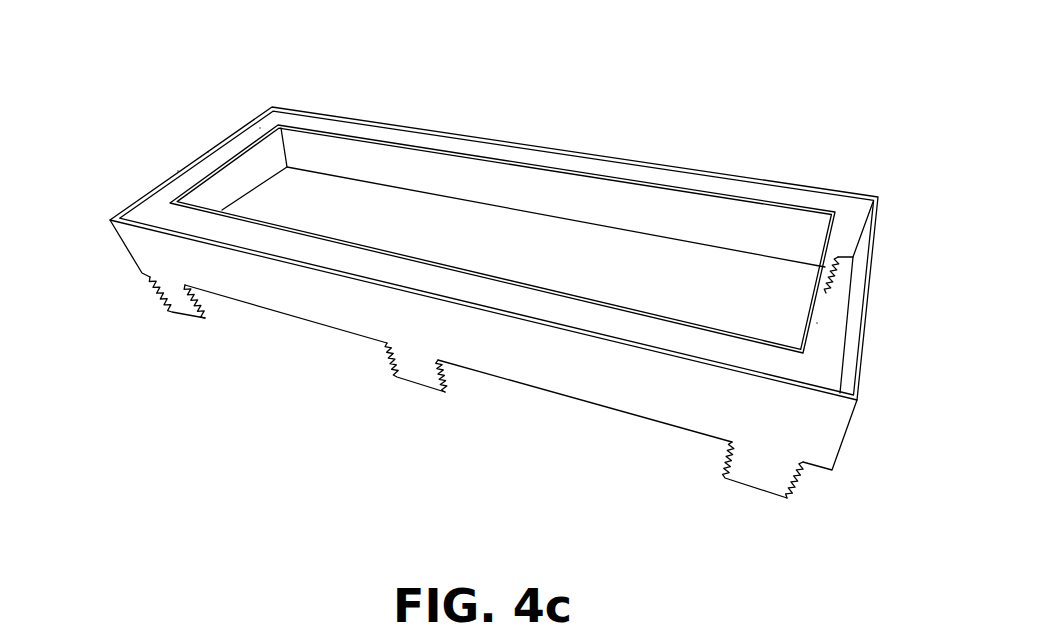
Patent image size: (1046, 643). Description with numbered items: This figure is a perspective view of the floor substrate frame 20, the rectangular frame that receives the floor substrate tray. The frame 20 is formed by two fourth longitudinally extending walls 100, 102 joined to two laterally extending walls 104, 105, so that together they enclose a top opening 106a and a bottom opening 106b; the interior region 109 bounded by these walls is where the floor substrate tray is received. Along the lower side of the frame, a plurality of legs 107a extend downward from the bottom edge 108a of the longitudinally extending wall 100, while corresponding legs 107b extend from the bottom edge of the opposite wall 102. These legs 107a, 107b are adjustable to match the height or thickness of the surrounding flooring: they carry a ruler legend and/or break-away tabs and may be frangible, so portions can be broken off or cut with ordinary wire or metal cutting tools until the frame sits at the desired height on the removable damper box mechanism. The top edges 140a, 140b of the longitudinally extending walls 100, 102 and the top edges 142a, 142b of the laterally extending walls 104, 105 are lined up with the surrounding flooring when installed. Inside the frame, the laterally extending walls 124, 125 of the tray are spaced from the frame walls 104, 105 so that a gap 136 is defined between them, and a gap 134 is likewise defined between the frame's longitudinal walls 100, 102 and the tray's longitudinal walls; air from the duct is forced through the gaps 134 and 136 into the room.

The fourth longitudinally extending wall 100 is at (662, 163).
The fourth longitudinally extending wall 102 is at (250, 280).
The laterally extending wall 104 is at (178, 171).
The laterally extending wall 105 is at (868, 330).
The top opening 106a is at (357, 122).
The bottom opening 106b is at (470, 372).
The legs 107a is at (182, 300).
The legs 107b is at (835, 278).
The bottom edge 108a is at (288, 317).
The cavity 109 is at (278, 190).
The laterally extending wall 124 is at (208, 152).
The laterally extending wall 125 is at (817, 323).
The gap 134 is at (450, 147).
The gap 136 is at (260, 128).
The top edge 140a is at (415, 125).
The top edge 140b is at (802, 390).
The top edge 142a is at (125, 218).
The top edge 142b is at (868, 315).
The floor substrate frame 20 is at (510, 549).